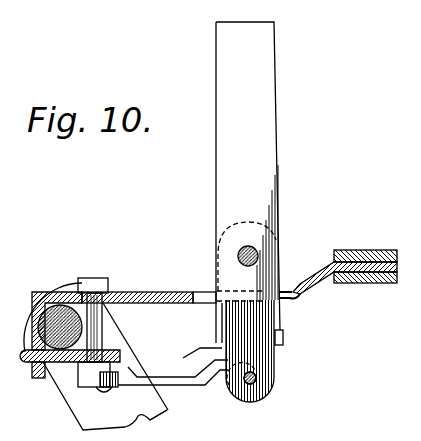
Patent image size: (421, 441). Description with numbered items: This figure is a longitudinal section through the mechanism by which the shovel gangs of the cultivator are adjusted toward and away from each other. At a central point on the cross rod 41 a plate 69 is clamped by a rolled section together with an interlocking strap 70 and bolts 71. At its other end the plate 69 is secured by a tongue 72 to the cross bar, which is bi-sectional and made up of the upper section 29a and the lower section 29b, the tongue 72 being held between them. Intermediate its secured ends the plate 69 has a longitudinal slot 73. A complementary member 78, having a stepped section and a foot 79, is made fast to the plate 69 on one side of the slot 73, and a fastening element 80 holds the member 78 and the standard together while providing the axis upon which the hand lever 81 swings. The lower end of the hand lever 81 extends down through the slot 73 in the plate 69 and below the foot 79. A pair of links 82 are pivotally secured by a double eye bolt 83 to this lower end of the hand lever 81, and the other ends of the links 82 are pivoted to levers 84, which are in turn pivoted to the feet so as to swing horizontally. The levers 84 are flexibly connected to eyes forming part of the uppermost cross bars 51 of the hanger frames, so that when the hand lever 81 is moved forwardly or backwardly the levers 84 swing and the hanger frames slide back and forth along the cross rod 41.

The cross rod 41 is at (57, 308).
The cross bar 51 is at (163, 414).
The plate 69 is at (138, 292).
The interlocking strap 70 is at (60, 367).
The bolts 71 is at (92, 323).
The tongue 72 is at (372, 262).
The longitudinal slot 73 is at (298, 297).
The complementary member 78 is at (217, 293).
The foot 79 is at (281, 348).
The fastening element 80 is at (258, 256).
The hand lever 81 is at (257, 203).
The links 82 is at (235, 383).
The double eye bolt 83 is at (268, 390).
The levers 84 is at (196, 357).
The upper section 29a is at (350, 248).
The lower section 29b is at (378, 284).